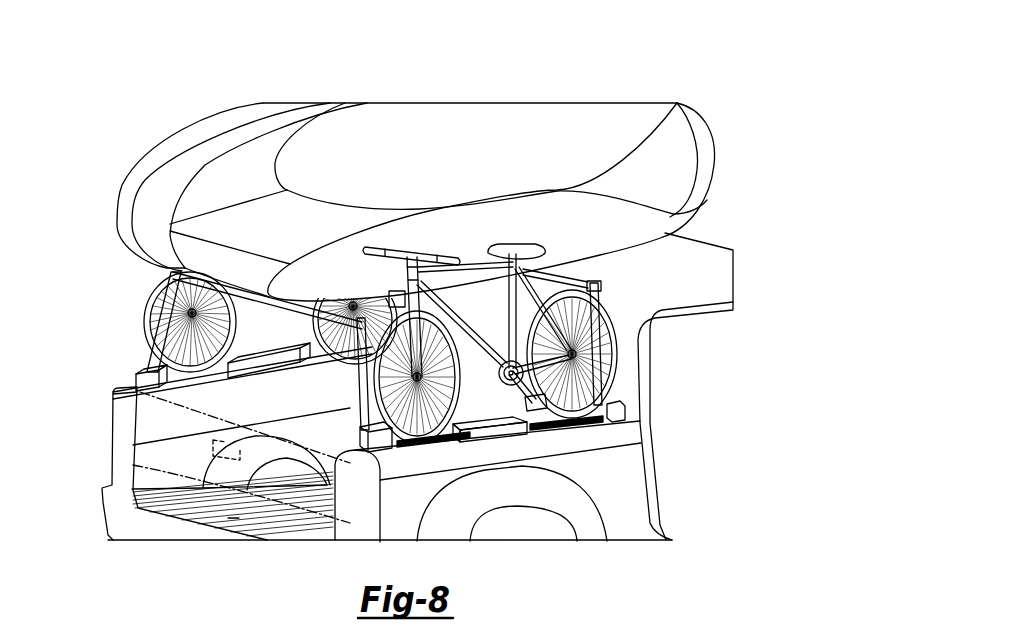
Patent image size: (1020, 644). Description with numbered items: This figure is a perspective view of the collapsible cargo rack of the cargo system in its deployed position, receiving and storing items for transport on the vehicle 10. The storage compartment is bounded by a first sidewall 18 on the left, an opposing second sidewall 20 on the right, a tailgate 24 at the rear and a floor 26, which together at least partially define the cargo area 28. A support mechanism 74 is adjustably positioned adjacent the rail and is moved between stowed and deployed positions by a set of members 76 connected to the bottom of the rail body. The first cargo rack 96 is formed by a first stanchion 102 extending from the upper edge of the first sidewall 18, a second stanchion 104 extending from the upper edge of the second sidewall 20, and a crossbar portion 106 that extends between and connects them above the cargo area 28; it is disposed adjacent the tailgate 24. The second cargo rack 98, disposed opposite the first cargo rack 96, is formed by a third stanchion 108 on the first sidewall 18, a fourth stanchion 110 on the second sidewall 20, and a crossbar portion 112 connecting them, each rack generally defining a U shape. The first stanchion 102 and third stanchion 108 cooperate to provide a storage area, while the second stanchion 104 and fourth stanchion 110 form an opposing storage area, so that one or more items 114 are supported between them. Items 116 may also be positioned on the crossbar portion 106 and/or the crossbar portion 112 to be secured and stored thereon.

The vehicle 10 is at (758, 184).
The first sidewall 18 is at (124, 436).
The second sidewall 20 is at (349, 518).
The tailgate 24 is at (143, 472).
The floor 26 is at (212, 512).
The cargo area 28 is at (233, 520).
The support mechanism 74 is at (253, 359).
The members 76 is at (498, 428).
The first cargo rack 96 is at (377, 430).
The second cargo rack 98 is at (574, 271).
The first stanchion 102 is at (150, 356).
The second stanchion 104 is at (372, 392).
The crossbar portion 106 is at (226, 288).
The third stanchion 108 is at (391, 298).
The fourth stanchion 110 is at (600, 287).
The crossbar portion 112 is at (538, 270).
The items 114 is at (156, 298).
The items 116 is at (693, 125).